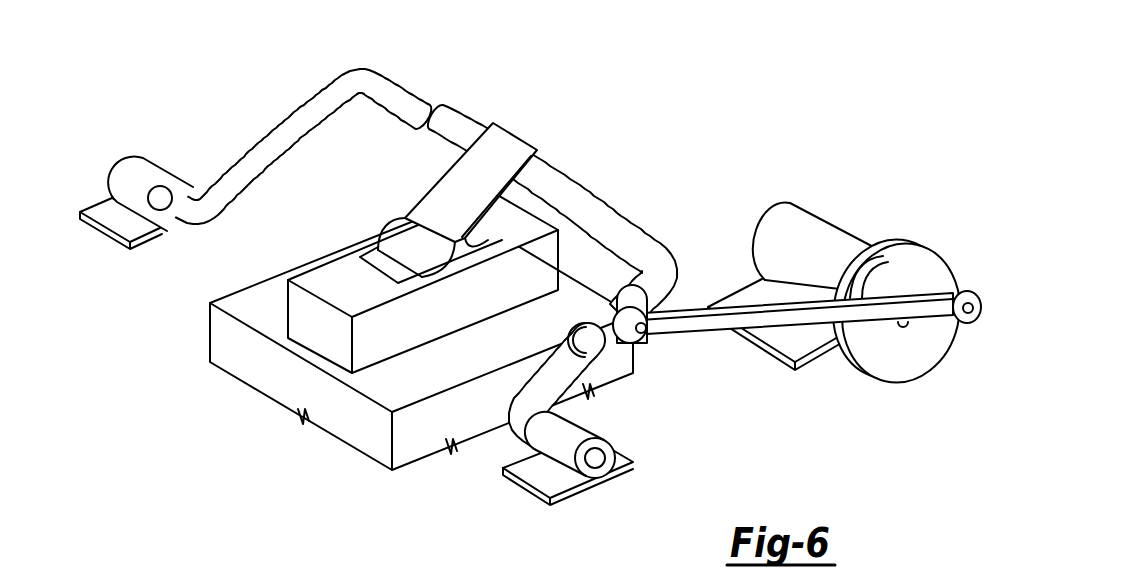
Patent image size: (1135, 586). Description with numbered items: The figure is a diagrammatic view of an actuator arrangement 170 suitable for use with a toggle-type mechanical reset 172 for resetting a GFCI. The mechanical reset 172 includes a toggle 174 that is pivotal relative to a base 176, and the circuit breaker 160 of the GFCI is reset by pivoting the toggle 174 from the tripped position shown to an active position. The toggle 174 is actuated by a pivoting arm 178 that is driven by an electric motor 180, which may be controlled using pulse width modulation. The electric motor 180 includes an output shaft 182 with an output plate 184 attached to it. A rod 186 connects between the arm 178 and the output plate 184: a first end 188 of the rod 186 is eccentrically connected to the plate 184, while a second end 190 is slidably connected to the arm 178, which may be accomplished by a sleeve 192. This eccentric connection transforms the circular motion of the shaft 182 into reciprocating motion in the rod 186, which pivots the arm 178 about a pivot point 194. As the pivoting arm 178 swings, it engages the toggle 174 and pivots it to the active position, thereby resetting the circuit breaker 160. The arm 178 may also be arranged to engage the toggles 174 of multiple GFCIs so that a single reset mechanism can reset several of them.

The circuit breaker 160 is at (290, 377).
The actuator arrangement 170 is at (626, 81).
The mechanical reset 172 is at (343, 352).
The toggle 174 is at (505, 150).
The base 176 is at (313, 317).
The pivoting arm 178 is at (403, 100).
The electric motor 180 is at (787, 225).
The output shaft 182 is at (883, 254).
The output plate 184 is at (930, 262).
The rod 186 is at (702, 324).
The first end 188 is at (971, 318).
The second end 190 is at (642, 334).
The sleeve 192 is at (590, 292).
The pivot point 194 is at (135, 175).